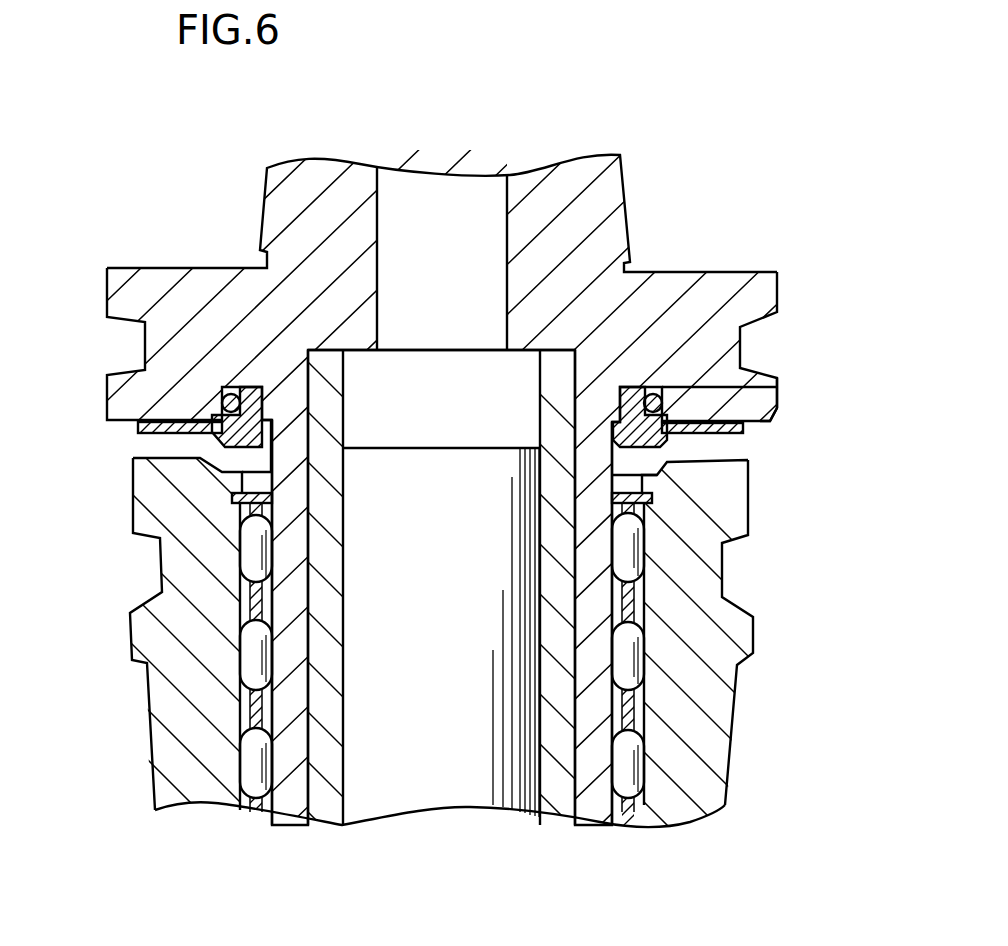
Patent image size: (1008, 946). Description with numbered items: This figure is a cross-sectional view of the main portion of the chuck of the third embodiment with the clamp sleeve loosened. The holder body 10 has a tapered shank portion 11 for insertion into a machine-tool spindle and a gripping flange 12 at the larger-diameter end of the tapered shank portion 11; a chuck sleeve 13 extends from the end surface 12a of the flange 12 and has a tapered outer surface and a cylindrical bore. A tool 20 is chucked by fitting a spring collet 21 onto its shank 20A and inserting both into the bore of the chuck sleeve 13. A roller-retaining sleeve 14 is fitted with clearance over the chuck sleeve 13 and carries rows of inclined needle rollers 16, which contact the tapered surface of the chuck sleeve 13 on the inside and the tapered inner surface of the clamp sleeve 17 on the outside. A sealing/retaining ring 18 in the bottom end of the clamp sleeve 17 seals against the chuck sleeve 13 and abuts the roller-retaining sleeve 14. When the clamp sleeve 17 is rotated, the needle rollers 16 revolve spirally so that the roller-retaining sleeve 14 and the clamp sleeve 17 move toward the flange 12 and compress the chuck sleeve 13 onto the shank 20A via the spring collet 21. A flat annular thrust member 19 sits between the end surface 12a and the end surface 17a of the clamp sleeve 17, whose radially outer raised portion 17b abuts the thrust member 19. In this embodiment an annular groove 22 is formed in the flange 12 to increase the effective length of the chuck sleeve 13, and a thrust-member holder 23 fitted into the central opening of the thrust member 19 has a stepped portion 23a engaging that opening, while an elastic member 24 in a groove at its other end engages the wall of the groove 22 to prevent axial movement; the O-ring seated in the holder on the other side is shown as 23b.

The holder body 10 is at (712, 133).
The tapered shank portion 11 is at (630, 207).
The gripping flange 12 is at (692, 286).
The end surface of the flange 12a is at (765, 423).
The chuck sleeve 13 is at (595, 613).
The roller-retaining sleeve 14 is at (630, 707).
The needle rollers 16 is at (624, 660).
The clamp sleeve 17 is at (712, 767).
The end surface of the clamp sleeve 17a is at (222, 470).
The raised portion 17b is at (200, 456).
The sealing/retaining ring 18 is at (725, 553).
The thrust member 19 is at (718, 436).
The tool 20 is at (437, 775).
The shank of the tool 20A is at (382, 768).
The spring collet 21 is at (543, 733).
The annular groove 22 is at (662, 390).
The thrust-member holder 23 is at (665, 452).
The stepped portion 23a is at (225, 448).
The O-ring (left) 23b is at (235, 385).
The elastic member 24 is at (745, 390).